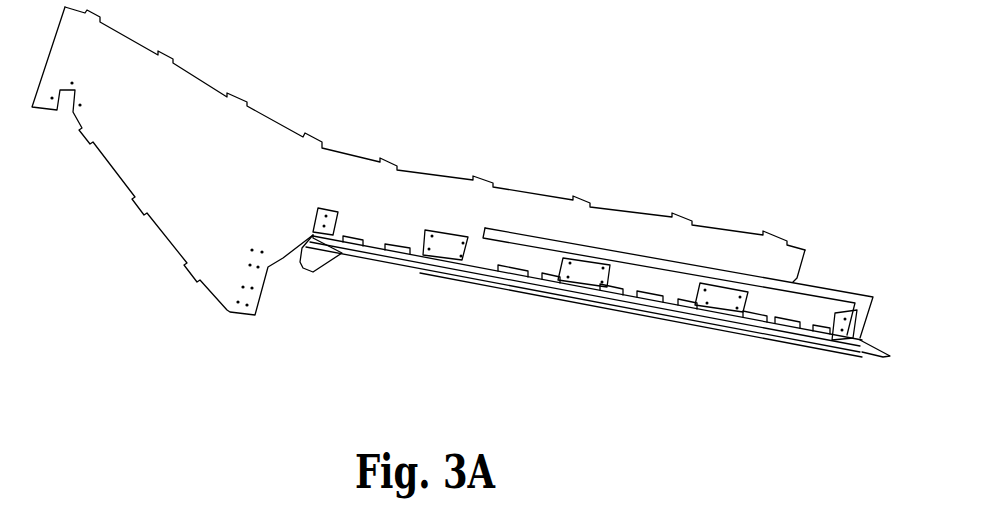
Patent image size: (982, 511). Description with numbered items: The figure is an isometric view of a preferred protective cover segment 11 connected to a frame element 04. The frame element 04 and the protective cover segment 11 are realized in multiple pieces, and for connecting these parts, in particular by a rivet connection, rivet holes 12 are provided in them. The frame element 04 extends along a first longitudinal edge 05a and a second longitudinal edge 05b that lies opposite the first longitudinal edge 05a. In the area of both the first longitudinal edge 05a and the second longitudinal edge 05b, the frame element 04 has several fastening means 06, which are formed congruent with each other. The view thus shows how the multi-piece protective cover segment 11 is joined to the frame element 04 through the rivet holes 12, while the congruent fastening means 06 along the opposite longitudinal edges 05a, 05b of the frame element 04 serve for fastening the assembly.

The frame element 04 is at (418, 161).
The first longitudinal edge 05a is at (453, 180).
The second longitudinal edge 05b is at (653, 295).
The fastening means 06 is at (588, 196).
The protective cover segment 11 is at (442, 250).
The rivet holes 12 is at (470, 245).